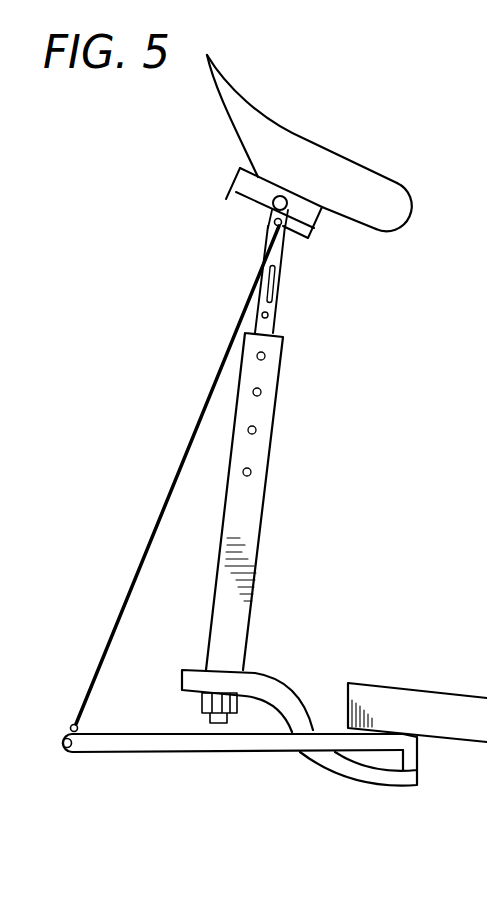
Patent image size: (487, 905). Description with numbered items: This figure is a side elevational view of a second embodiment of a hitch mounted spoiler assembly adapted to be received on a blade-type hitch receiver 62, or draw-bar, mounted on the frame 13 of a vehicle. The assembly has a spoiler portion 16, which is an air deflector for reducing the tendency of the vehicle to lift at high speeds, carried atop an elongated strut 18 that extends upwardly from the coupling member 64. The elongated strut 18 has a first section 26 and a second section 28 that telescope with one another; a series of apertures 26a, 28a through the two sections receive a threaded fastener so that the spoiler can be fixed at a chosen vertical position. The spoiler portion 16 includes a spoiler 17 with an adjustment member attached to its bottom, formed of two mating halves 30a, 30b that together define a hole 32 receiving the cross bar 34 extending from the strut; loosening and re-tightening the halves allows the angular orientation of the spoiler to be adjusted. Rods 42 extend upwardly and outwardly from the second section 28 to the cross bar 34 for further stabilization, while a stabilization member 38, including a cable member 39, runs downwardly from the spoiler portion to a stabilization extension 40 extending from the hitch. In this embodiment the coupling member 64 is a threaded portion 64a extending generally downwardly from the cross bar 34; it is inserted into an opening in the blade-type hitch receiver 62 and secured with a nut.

The frame 13 is at (430, 705).
The spoiler portion 16 is at (335, 143).
The spoiler 17 is at (393, 193).
The elongated strut 18 is at (350, 375).
The first section 26 is at (285, 501).
The apertures 26a is at (256, 430).
The second section 28 is at (316, 290).
The apertures 28a is at (270, 316).
The mating half 30a is at (261, 182).
The mating half 30b is at (249, 200).
The hole 32 is at (280, 196).
The cross bar 34 is at (287, 199).
The stabilization member 38 is at (175, 479).
The cable member 39 is at (213, 382).
The stabilization extension 40 is at (132, 747).
The rod 42 is at (274, 276).
The blade-type hitch receiver 62 is at (417, 773).
The coupling member 64 is at (208, 737).
The threaded portion 64a is at (213, 723).